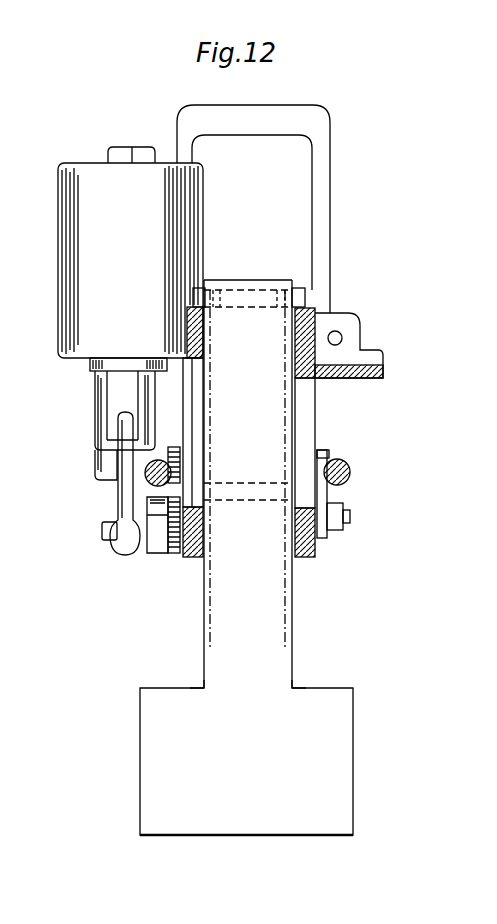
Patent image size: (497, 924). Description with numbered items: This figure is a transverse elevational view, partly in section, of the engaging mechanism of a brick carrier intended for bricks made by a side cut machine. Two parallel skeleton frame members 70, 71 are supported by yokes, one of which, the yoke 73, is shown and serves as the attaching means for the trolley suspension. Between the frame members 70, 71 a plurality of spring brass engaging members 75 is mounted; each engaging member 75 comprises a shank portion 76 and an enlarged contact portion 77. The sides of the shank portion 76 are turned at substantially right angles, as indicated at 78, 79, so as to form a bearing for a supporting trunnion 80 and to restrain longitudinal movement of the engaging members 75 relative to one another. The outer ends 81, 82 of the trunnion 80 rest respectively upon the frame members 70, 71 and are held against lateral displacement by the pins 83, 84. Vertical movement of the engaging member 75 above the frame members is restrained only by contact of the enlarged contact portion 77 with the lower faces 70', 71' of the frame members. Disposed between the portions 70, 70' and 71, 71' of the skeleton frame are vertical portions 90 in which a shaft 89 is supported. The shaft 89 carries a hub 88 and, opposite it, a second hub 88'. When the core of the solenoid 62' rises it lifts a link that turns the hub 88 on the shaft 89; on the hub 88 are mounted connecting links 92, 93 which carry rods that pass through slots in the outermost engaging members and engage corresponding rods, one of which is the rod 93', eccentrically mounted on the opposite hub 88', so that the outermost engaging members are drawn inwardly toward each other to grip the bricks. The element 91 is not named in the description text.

The solenoid 62' is at (130, 252).
The yoke 73 is at (267, 117).
The outer end of trunnion 82 is at (203, 296).
The outer end of trunnion 81 is at (302, 296).
The supporting trunnion 80 is at (258, 290).
The skeleton frame member 71 is at (150, 324).
The lower face of frame member 71' is at (174, 557).
The skeleton frame member 70 is at (339, 336).
The lower face of frame member 70' is at (339, 478).
The pin 84 is at (220, 307).
The pin 83 is at (280, 312).
The guide bar 91 is at (193, 403).
The vertical portion 90 is at (303, 423).
The connecting link 93 is at (135, 422).
The rod 93' is at (354, 451).
The connecting link 92 is at (338, 507).
The hub 88 is at (141, 496).
The hub 88' is at (361, 523).
The shaft 89 is at (247, 493).
The turned side of shank portion 78 is at (210, 600).
The turned side of shank portion 79 is at (282, 630).
The shank portion 76 is at (217, 677).
The engaging member 75 is at (277, 677).
The enlarged contact portion 77 is at (217, 812).